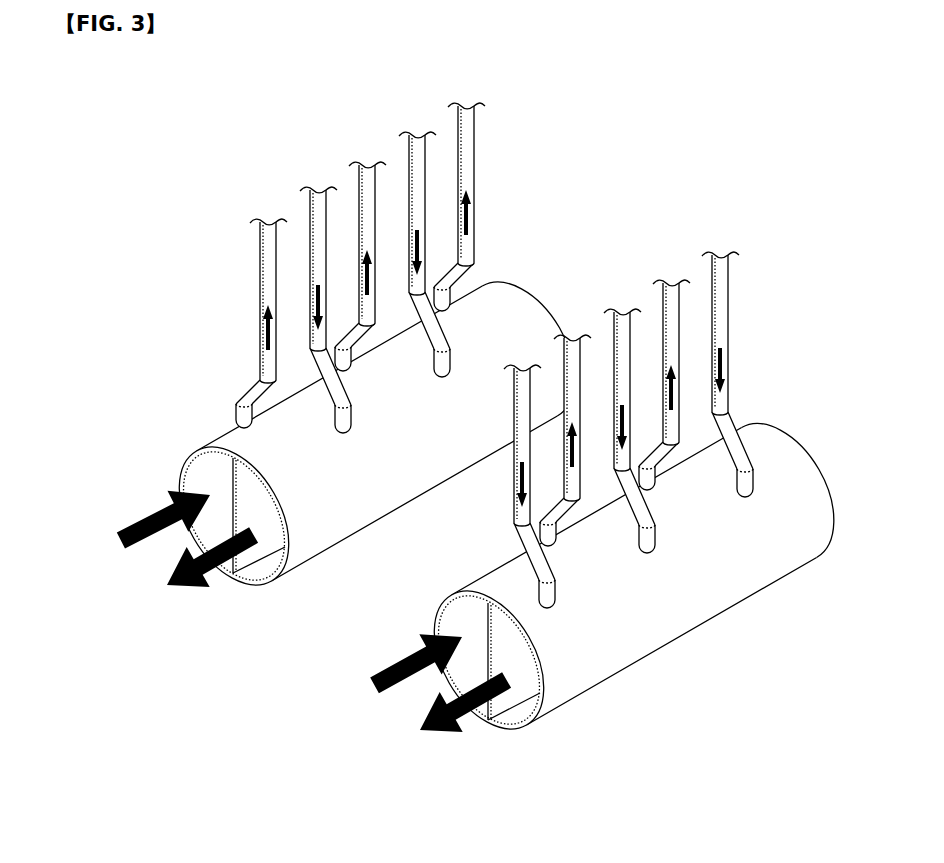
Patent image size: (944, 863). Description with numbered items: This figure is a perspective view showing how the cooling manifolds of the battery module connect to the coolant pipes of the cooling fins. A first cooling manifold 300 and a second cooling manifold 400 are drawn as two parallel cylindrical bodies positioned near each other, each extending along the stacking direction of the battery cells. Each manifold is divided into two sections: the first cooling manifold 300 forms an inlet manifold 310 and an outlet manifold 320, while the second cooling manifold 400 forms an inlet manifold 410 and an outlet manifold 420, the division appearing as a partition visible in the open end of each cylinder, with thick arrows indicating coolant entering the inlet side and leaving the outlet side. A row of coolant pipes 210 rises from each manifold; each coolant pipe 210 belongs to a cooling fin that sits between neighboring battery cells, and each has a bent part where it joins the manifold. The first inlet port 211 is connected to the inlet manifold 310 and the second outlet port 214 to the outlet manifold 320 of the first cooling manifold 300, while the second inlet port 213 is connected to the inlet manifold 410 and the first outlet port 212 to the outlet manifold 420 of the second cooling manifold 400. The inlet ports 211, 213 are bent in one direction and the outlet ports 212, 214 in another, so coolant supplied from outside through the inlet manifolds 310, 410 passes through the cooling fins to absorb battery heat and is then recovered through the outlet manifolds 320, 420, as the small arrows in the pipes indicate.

The coolant pipe 210 is at (466, 438).
The first inlet port 211 is at (255, 385).
The first outlet port 212 is at (553, 563).
The second inlet port 213 is at (600, 508).
The second outlet port 214 is at (347, 418).
The first cooling manifold 300 is at (210, 443).
The inlet manifold 310 is at (205, 470).
The outlet manifold 320 is at (263, 573).
The second cooling manifold 400 is at (733, 577).
The inlet manifold 410 is at (455, 627).
The outlet manifold 420 is at (513, 717).